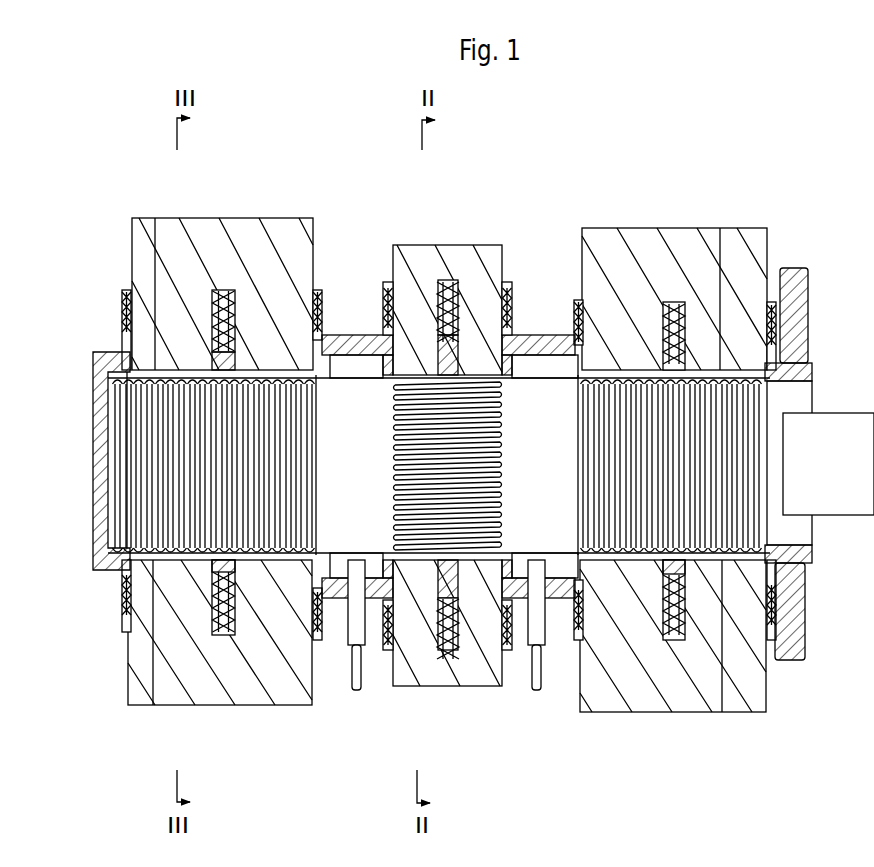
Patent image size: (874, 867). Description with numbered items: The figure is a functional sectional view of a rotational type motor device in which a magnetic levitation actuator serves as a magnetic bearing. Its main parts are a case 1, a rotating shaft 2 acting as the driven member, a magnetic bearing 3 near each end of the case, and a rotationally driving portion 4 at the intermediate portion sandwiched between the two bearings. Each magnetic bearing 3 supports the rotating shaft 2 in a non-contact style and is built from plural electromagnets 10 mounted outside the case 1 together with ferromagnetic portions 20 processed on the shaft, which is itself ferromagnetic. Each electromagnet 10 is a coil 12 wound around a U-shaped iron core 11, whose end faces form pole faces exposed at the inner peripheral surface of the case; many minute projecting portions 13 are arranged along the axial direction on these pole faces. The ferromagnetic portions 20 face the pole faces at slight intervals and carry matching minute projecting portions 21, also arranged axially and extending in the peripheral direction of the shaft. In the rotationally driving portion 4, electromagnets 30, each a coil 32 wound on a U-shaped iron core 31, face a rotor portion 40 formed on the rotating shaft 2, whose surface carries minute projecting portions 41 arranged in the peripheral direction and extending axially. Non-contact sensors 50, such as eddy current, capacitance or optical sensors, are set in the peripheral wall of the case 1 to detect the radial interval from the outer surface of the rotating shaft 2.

The case 1 is at (548, 335).
The rotating shaft 2 is at (835, 413).
The magnetic bearing 3 is at (459, 451).
The rotationally driving portion 4 is at (447, 454).
The electromagnet 10 is at (447, 454).
The U-shaped iron core 11 is at (200, 218).
The coil 12 is at (124, 292).
The projecting portion 13 is at (155, 218).
The ferromagnetic portion 20 is at (437, 466).
The projecting portion 21 is at (312, 504).
The electromagnet 30 is at (447, 454).
The U-shaped iron core 31 is at (447, 245).
The coil 32 is at (388, 282).
The rotor portion 40 is at (461, 466).
The projecting portion 41 is at (405, 458).
The non-contact sensor 50 is at (357, 690).